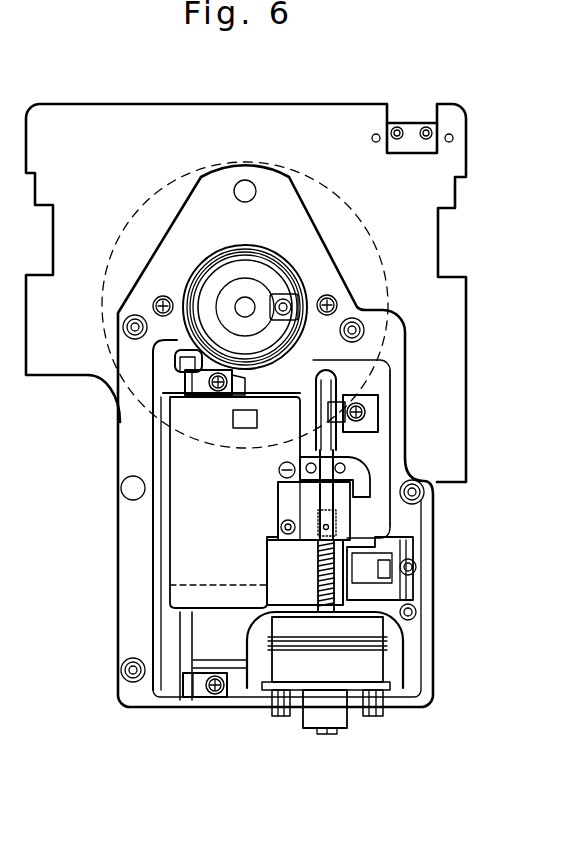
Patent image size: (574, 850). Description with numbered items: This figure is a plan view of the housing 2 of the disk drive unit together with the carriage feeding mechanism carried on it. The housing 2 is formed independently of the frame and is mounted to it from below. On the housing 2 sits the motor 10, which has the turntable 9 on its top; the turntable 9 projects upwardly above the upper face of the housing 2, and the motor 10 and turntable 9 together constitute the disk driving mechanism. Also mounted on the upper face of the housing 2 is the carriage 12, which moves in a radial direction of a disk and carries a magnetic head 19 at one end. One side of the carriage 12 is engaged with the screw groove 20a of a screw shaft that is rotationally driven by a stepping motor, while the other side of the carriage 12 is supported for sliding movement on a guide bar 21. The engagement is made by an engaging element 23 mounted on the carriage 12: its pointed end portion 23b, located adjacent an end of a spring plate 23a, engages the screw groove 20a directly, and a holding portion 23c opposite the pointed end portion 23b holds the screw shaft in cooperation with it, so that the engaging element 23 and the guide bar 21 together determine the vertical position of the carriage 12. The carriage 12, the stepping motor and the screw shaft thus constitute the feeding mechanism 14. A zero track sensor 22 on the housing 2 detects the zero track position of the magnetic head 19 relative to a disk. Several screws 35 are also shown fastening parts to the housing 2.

The housing 2 is at (128, 457).
The turntable 9 is at (267, 268).
The motor 10 is at (102, 314).
The carriage 12 is at (173, 533).
The feeding mechanism 14 is at (386, 637).
The magnetic head 19 is at (233, 420).
The screw groove 20a is at (323, 578).
The guide bar 21 is at (185, 633).
The zero track sensor 22 is at (363, 567).
The engaging element 23 is at (366, 455).
The spring plate 23a is at (347, 514).
The pointed end portion 23b is at (323, 528).
The holding portion 23c is at (300, 512).
The screws 35 is at (232, 386).